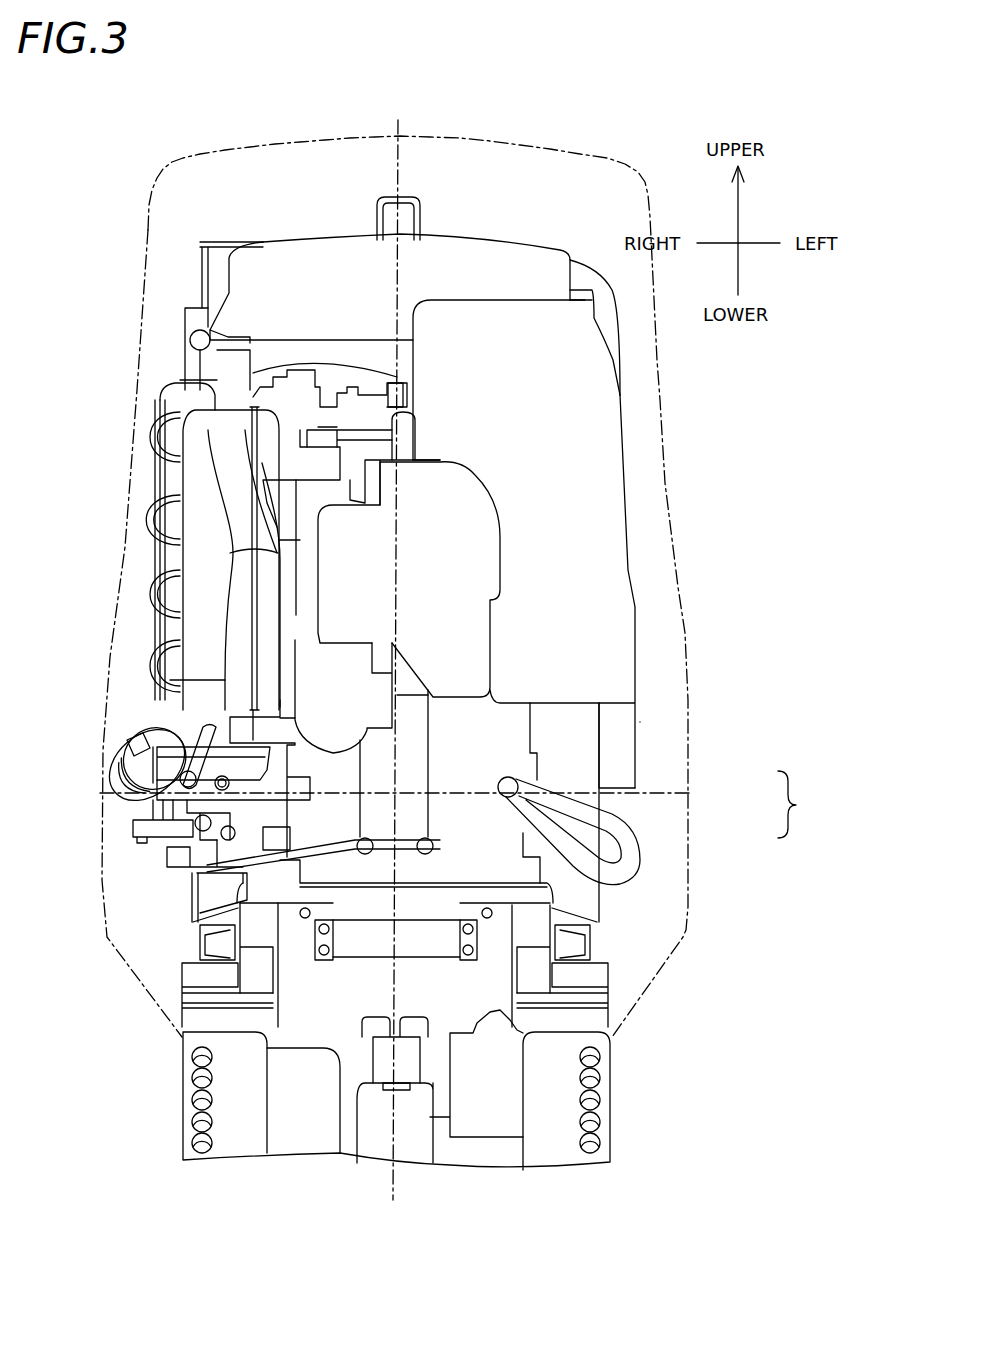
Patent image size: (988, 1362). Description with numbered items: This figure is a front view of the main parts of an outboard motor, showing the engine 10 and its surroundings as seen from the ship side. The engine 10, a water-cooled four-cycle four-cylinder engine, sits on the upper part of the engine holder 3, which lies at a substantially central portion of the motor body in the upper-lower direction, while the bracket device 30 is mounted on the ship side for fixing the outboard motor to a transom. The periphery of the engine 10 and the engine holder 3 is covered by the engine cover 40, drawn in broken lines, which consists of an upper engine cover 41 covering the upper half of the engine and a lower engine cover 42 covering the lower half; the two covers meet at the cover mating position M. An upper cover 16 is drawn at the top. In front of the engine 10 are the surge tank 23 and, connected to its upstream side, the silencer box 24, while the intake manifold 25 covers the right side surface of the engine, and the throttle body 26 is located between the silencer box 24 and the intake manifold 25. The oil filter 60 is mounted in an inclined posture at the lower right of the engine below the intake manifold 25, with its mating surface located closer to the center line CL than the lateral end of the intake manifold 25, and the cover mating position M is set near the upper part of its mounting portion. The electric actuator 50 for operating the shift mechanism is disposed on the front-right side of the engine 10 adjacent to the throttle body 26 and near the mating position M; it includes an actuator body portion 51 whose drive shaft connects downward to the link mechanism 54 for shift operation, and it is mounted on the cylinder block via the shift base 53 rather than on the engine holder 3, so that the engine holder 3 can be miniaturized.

The engine holder 3 is at (600, 902).
The engine 10 is at (640, 720).
The top cover 16 is at (487, 263).
The surge tank 23 is at (437, 537).
The silencer box 24 is at (580, 441).
The intake manifold 25 is at (148, 545).
The throttle body 26 is at (323, 710).
The bracket device 30 is at (175, 1105).
The engine cover 40 is at (800, 804).
The upper engine cover 41 is at (688, 750).
The lower engine cover 42 is at (688, 850).
The electric actuator 50 is at (147, 858).
The actuator body portion 51 is at (243, 770).
The shift base 53 is at (180, 865).
The link mechanism 54 is at (130, 831).
The oil filter 60 is at (130, 776).
The center line CL is at (397, 173).
The cover mating position M is at (673, 735).